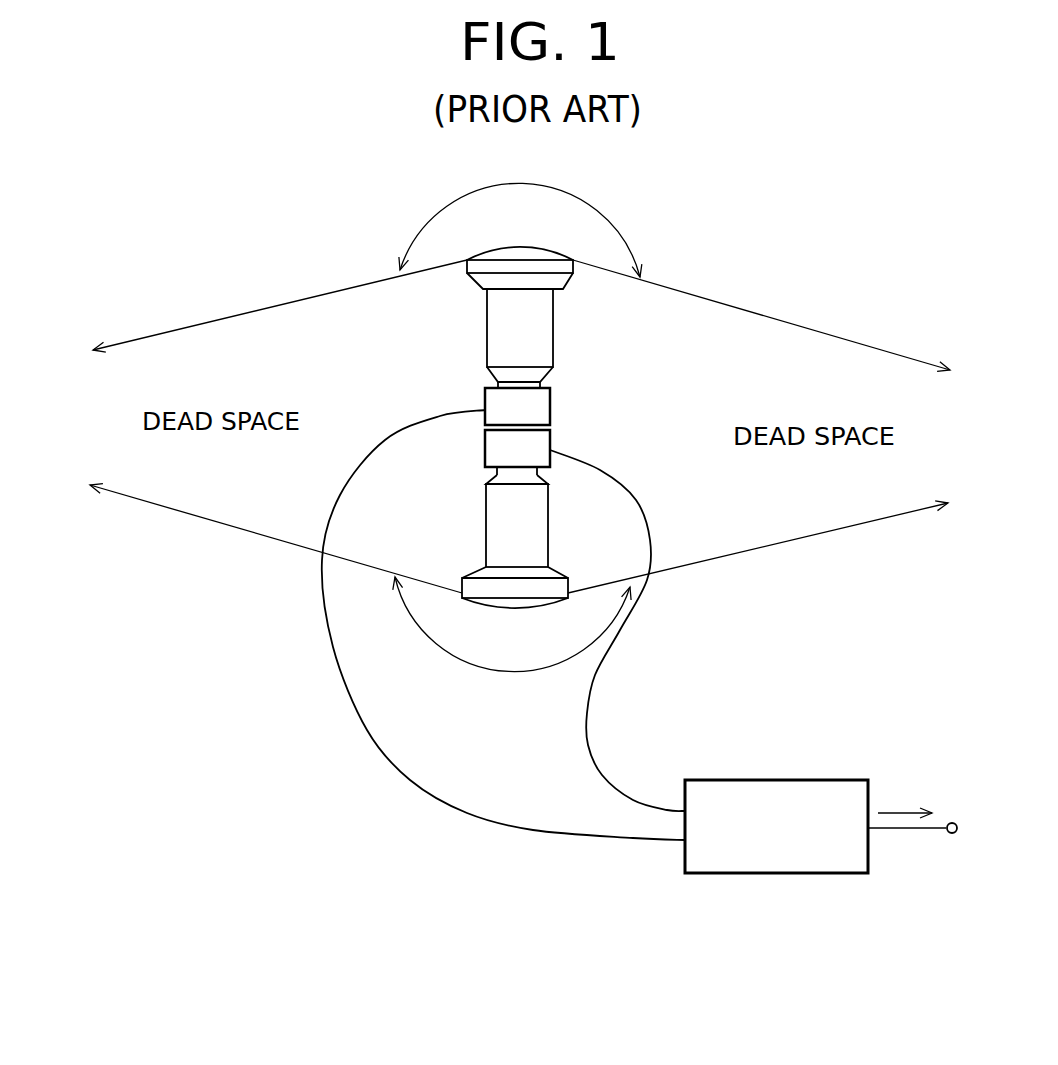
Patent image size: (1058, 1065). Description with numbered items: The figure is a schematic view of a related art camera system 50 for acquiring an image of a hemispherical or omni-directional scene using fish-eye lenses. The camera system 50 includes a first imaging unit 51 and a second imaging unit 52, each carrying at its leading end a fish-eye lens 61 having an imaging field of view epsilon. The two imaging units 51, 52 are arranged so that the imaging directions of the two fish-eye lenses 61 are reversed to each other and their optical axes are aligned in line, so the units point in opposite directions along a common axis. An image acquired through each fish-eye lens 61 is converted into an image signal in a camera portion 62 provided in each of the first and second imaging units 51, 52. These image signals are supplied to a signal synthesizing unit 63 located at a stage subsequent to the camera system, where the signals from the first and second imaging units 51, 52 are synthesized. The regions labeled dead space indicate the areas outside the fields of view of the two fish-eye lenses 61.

The camera system 50 is at (680, 661).
The first imaging unit 51 is at (547, 333).
The second imaging unit 52 is at (490, 518).
The fish-eye lens 61 is at (504, 247).
The camera portion 62 is at (542, 408).
The signal synthesizing unit 63 is at (773, 780).